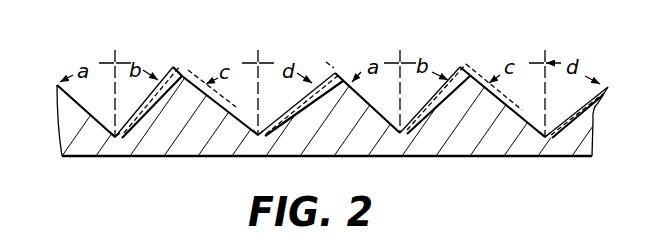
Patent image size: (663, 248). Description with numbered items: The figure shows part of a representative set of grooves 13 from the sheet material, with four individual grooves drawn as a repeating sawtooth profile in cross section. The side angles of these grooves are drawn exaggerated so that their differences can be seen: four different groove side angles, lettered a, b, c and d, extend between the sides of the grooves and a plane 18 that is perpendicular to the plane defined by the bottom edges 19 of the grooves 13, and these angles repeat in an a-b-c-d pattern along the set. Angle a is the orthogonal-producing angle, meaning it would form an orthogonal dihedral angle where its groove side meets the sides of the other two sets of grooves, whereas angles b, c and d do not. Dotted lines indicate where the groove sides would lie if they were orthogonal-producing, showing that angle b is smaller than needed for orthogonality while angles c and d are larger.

The grooves 13 is at (84, 100).
The plane 18 is at (117, 61).
The bottom edges 19 is at (115, 138).